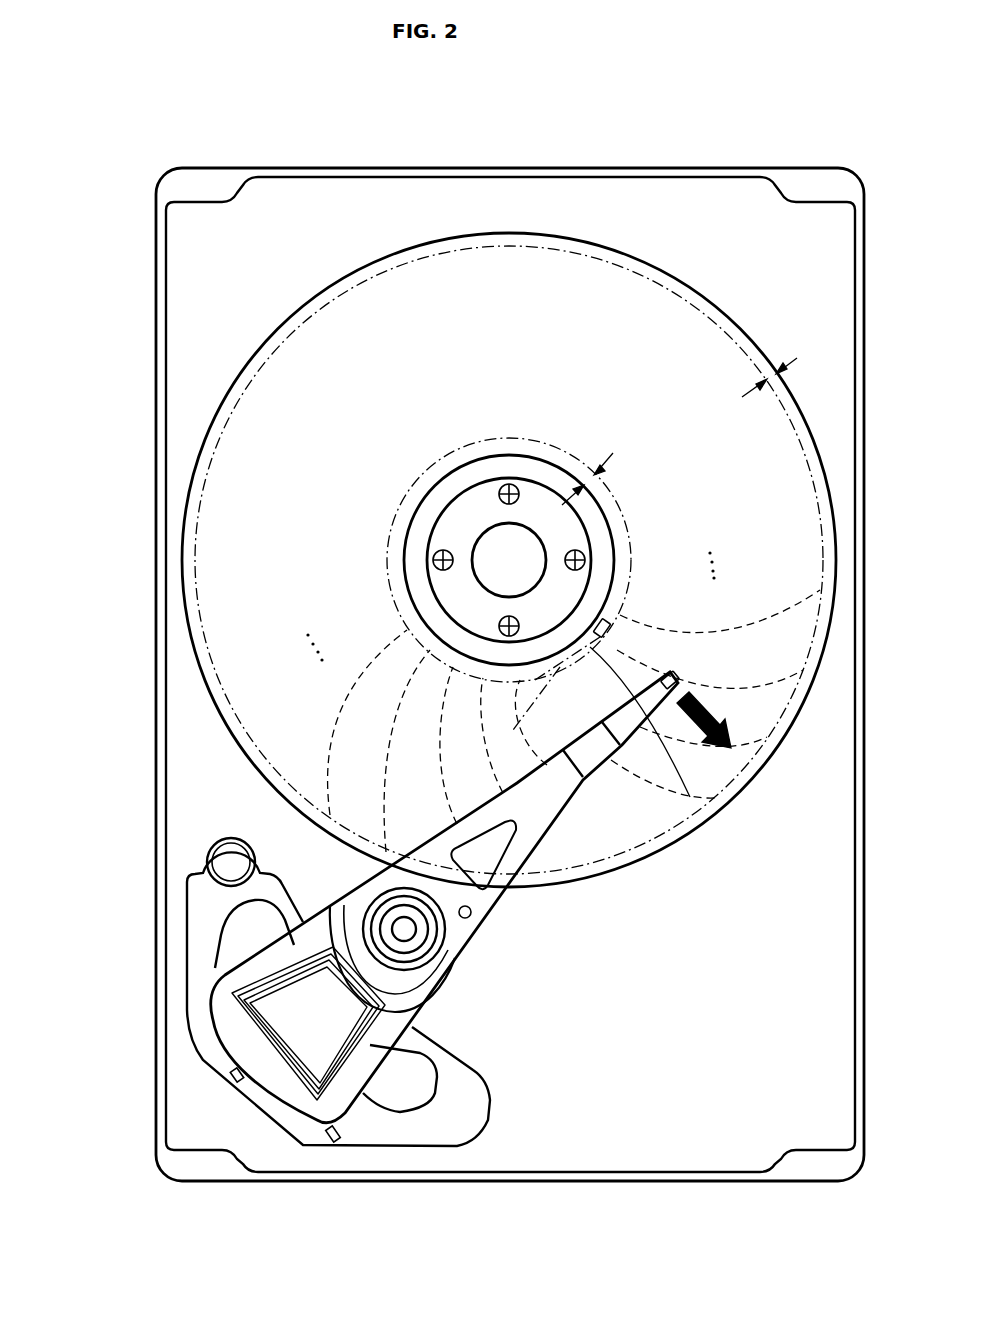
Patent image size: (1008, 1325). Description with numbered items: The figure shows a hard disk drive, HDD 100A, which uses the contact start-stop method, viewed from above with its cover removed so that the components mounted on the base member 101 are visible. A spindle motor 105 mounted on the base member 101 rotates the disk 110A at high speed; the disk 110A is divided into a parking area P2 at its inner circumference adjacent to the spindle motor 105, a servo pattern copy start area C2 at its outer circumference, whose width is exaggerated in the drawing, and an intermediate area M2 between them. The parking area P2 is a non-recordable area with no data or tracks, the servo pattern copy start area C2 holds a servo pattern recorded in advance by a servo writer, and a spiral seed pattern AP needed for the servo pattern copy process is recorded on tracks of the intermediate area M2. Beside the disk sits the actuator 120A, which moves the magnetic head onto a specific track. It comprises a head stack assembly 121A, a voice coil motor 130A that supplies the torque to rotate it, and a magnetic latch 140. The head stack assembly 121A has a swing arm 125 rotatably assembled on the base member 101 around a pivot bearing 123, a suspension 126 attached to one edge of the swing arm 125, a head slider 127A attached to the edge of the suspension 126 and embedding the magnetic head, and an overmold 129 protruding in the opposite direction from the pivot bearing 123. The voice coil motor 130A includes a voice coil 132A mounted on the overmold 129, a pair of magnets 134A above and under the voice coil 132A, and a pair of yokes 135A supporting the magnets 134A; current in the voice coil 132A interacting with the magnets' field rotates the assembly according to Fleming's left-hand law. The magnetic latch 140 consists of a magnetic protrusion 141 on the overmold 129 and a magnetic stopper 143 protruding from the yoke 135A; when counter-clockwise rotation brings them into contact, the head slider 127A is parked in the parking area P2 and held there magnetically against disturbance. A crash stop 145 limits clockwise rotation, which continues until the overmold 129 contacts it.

The HDD 100A is at (803, 153).
The base member 101 is at (156, 414).
The disk 110A is at (538, 235).
The spindle motor 105 is at (486, 470).
The intermediate area M2 is at (236, 401).
The parking area P2 is at (570, 492).
The servo pattern copy start area C2 is at (765, 370).
The spiral seed pattern AP is at (335, 727).
The actuator 120A is at (475, 883).
The head stack assembly 121A is at (738, 898).
The pivot bearing 123 is at (417, 937).
The swing arm 125 is at (532, 855).
The suspension 126 is at (597, 765).
The head slider 127A is at (668, 692).
The overmold 129 is at (387, 1062).
The voice coil motor 130A is at (250, 999).
The voice coil 132A is at (247, 1038).
The magnets 134A is at (233, 943).
The yokes 135A is at (197, 929).
The crash stop 145 is at (206, 863).
The magnetic latch 140 is at (299, 1169).
The magnetic protrusion 141 is at (240, 1093).
The magnetic stopper 143 is at (347, 1177).